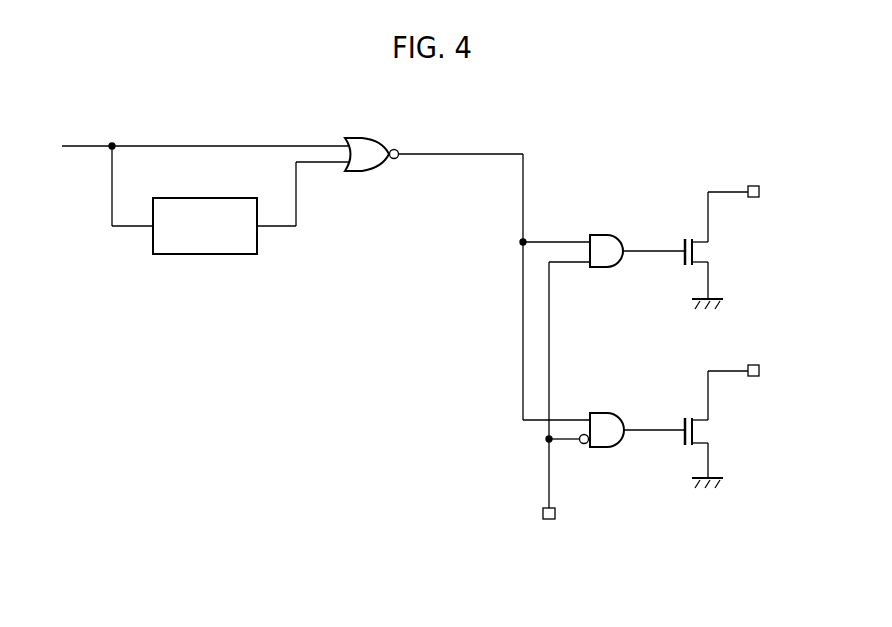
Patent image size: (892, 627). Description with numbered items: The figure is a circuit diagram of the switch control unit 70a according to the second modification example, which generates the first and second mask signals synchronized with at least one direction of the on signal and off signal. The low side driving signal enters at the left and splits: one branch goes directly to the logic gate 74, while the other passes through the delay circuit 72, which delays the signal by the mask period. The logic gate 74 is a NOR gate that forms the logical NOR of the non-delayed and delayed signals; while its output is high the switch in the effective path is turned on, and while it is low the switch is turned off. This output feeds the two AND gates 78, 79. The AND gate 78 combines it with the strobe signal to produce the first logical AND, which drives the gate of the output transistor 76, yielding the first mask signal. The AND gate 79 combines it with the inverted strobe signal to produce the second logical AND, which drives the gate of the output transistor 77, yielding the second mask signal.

The switch control unit 70a is at (480, 605).
The delay circuit 72 is at (208, 255).
The logic gate 74 is at (361, 137).
The output transistor 76 is at (718, 251).
The output transistor 77 is at (718, 430).
The AND gate 78 is at (608, 268).
The AND gate 79 is at (608, 448).